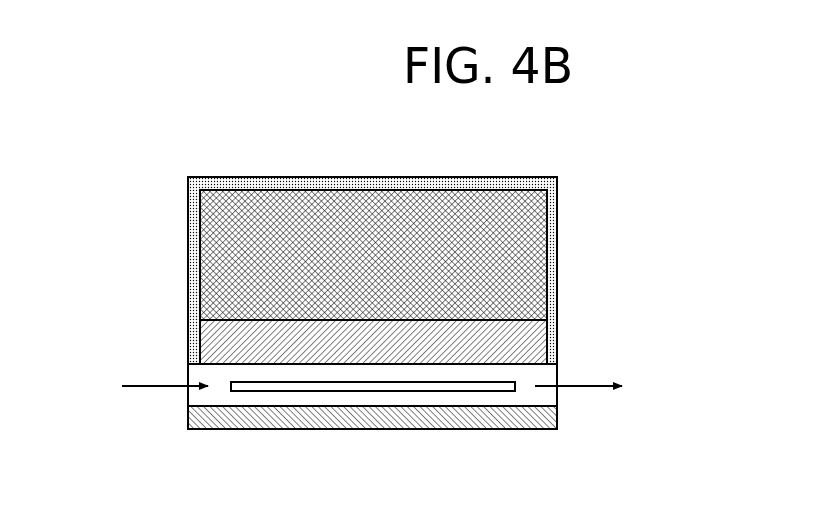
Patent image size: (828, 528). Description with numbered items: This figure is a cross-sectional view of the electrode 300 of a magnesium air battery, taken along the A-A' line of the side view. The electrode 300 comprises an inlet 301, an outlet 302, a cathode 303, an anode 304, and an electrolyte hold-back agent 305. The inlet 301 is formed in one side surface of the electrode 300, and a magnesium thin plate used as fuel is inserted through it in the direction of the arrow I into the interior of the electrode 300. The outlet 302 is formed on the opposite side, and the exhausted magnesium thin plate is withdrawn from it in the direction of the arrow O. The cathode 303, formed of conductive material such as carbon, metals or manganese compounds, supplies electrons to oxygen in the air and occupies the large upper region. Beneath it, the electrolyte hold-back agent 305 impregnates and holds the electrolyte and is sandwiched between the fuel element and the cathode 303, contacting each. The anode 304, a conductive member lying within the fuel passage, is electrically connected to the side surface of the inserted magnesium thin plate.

The electrode 300 is at (166, 157).
The inlet 301 is at (188, 375).
The outlet 302 is at (557, 373).
The cathode 303 is at (208, 254).
The anode 304 is at (372, 392).
The electrolyte hold-back agent 305 is at (208, 344).